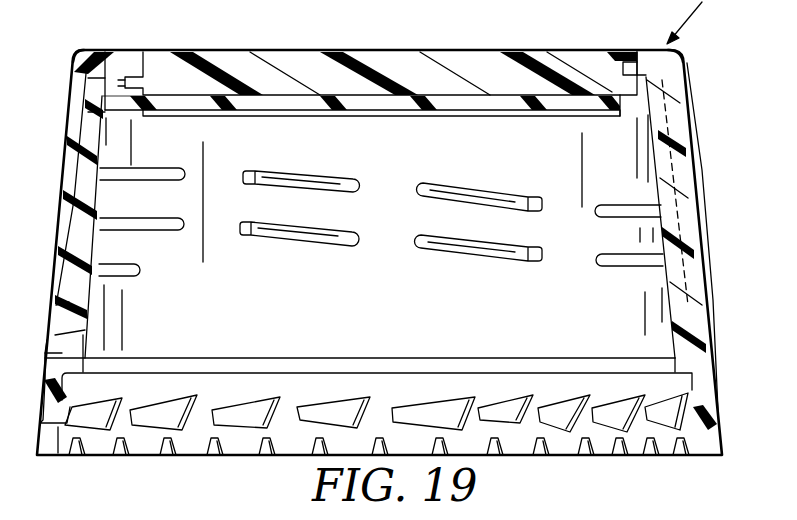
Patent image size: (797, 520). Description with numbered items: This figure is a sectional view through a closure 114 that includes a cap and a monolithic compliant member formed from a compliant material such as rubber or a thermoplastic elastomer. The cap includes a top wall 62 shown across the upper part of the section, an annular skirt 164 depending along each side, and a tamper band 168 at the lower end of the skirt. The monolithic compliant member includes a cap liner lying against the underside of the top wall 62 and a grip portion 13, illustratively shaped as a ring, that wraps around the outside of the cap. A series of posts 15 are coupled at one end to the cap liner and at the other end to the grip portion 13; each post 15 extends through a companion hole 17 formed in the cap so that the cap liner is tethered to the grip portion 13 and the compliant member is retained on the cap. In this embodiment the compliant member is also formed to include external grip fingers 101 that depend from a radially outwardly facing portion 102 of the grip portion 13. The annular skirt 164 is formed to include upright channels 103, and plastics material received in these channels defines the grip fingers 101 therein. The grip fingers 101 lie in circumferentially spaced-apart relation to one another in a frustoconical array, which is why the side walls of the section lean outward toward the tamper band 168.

The grip portion 13 is at (121, 44).
The posts 15 is at (118, 88).
The companion hole 17 is at (622, 80).
The top wall 62 is at (295, 62).
The external grip fingers 101 is at (68, 173).
The radially outwardly facing portion 102 is at (75, 61).
The upright channels 103 is at (684, 278).
The closure 114 is at (703, 102).
The annular skirt 164 is at (712, 325).
The tamper band 168 is at (726, 401).